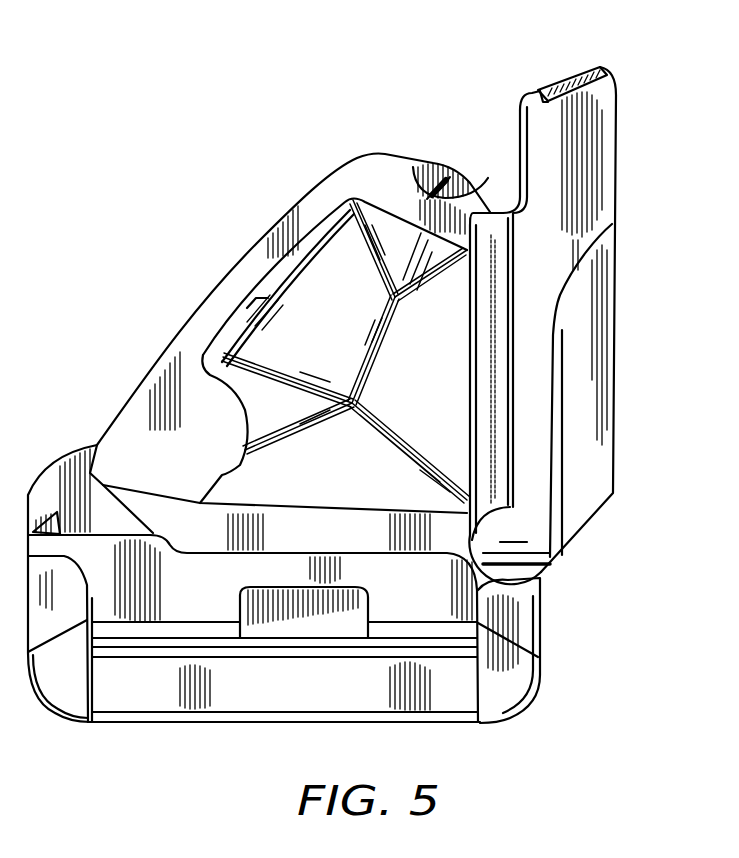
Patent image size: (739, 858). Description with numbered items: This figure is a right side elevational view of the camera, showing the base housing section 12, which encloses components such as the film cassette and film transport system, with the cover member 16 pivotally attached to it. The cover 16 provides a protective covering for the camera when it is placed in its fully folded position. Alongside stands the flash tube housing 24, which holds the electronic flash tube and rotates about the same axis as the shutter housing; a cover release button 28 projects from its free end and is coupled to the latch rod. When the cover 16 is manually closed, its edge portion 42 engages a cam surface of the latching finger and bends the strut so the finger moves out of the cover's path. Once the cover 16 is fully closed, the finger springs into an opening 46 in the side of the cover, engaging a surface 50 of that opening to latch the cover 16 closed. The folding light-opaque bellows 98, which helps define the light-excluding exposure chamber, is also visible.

The base housing section 12 is at (522, 613).
The cover member 16 is at (221, 282).
The flash tube housing 24 is at (604, 115).
The cover release button 28 is at (571, 80).
The edge portion 42 is at (400, 224).
The opening 46 is at (416, 164).
The surface 50 is at (445, 198).
The bellows 98 is at (278, 392).